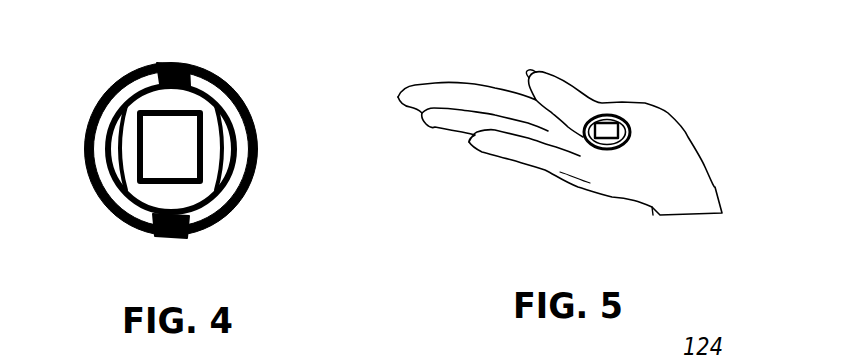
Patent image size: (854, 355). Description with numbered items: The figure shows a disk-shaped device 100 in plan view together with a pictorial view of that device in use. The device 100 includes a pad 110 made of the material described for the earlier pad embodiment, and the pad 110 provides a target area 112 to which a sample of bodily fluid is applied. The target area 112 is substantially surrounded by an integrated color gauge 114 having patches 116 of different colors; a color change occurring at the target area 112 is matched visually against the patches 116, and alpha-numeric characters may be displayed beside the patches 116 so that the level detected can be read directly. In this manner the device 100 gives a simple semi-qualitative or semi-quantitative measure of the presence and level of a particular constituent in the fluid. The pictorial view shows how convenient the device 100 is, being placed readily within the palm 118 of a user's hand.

In FIG. 4, the disk-shaped device 100 is at (244, 92).
In FIG. 5, the disk-shaped device 100 is at (624, 114).
In FIG. 4, the pad 110 is at (208, 140).
In FIG. 4, the target area 112 is at (183, 163).
In FIG. 4, the integrated color gauge 114 is at (232, 218).
In FIG. 4, the patches 116 is at (153, 101).
In FIG. 5, the palm 118 is at (655, 122).